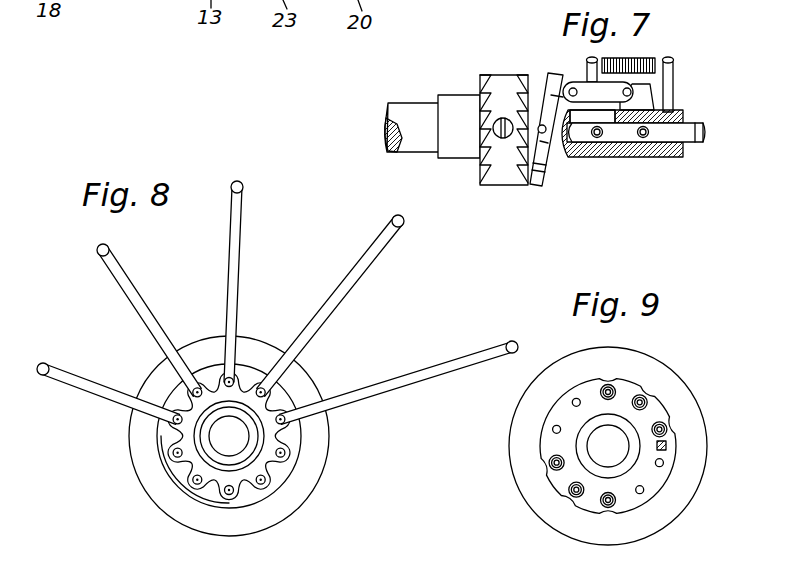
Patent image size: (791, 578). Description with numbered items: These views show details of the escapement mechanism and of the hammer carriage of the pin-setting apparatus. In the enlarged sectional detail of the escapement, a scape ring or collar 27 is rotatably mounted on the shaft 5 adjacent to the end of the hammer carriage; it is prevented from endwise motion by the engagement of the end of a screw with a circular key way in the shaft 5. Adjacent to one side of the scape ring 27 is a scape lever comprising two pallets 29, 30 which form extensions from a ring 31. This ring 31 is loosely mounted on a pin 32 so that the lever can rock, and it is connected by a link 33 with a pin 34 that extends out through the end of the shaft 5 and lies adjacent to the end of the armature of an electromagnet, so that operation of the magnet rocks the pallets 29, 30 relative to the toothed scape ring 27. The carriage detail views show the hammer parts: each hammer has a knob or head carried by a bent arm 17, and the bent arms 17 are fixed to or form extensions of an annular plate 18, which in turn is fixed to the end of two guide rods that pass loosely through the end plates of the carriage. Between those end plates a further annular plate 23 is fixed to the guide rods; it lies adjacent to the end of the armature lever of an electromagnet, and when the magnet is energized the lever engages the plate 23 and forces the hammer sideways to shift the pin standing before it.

In FIG. 7, the shaft 5 is at (640, 153).
In FIG. 7, the scape ring 27 is at (499, 75).
In FIG. 7, the pallet 29 is at (534, 178).
In FIG. 7, the pallet 30 is at (553, 66).
In FIG. 7, the ring 31 is at (545, 142).
In FIG. 7, the pin 32 is at (552, 137).
In FIG. 7, the link 33 is at (648, 102).
In FIG. 7, the pin 34 is at (700, 142).
In FIG. 8, the bent arm 17 is at (80, 374).
In FIG. 8, the annular plate 18 is at (287, 463).
In FIG. 9, the annular plate 23 is at (520, 490).